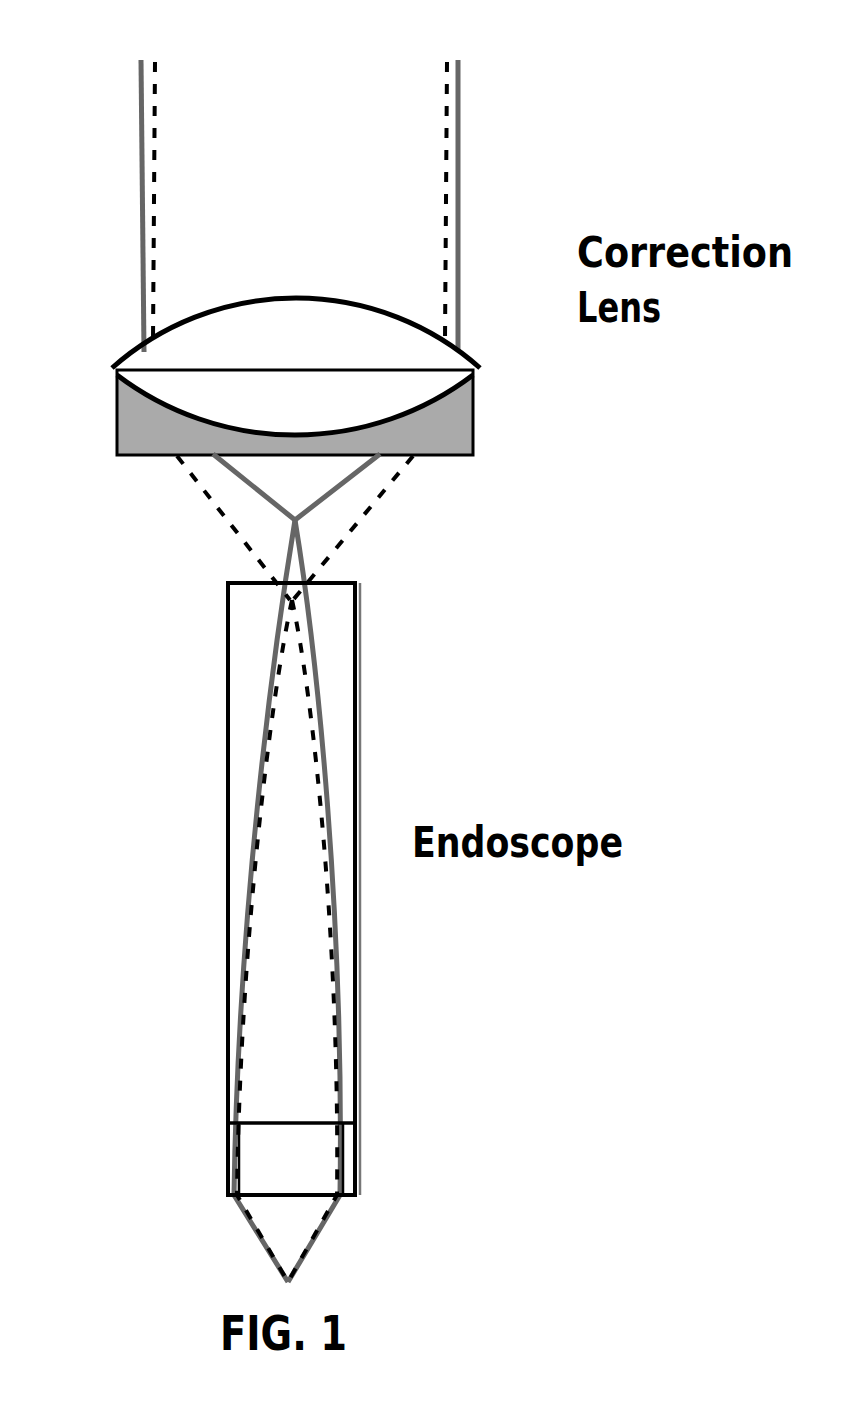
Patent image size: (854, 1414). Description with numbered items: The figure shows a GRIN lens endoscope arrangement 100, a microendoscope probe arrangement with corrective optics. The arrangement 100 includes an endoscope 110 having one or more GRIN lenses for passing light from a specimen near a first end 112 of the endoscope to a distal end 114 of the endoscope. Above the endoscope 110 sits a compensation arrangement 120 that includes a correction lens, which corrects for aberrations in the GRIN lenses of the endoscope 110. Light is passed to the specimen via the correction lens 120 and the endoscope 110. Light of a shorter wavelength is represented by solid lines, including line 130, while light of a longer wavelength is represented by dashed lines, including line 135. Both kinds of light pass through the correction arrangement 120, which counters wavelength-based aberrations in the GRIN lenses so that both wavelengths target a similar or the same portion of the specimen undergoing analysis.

The GRIN lens endoscope arrangement 100 is at (681, 42).
The endoscope 110 is at (352, 765).
The first end 112 is at (334, 1197).
The distal end 114 is at (343, 581).
The compensation arrangement 120 is at (473, 400).
The line 130 is at (455, 183).
The line 135 is at (433, 210).